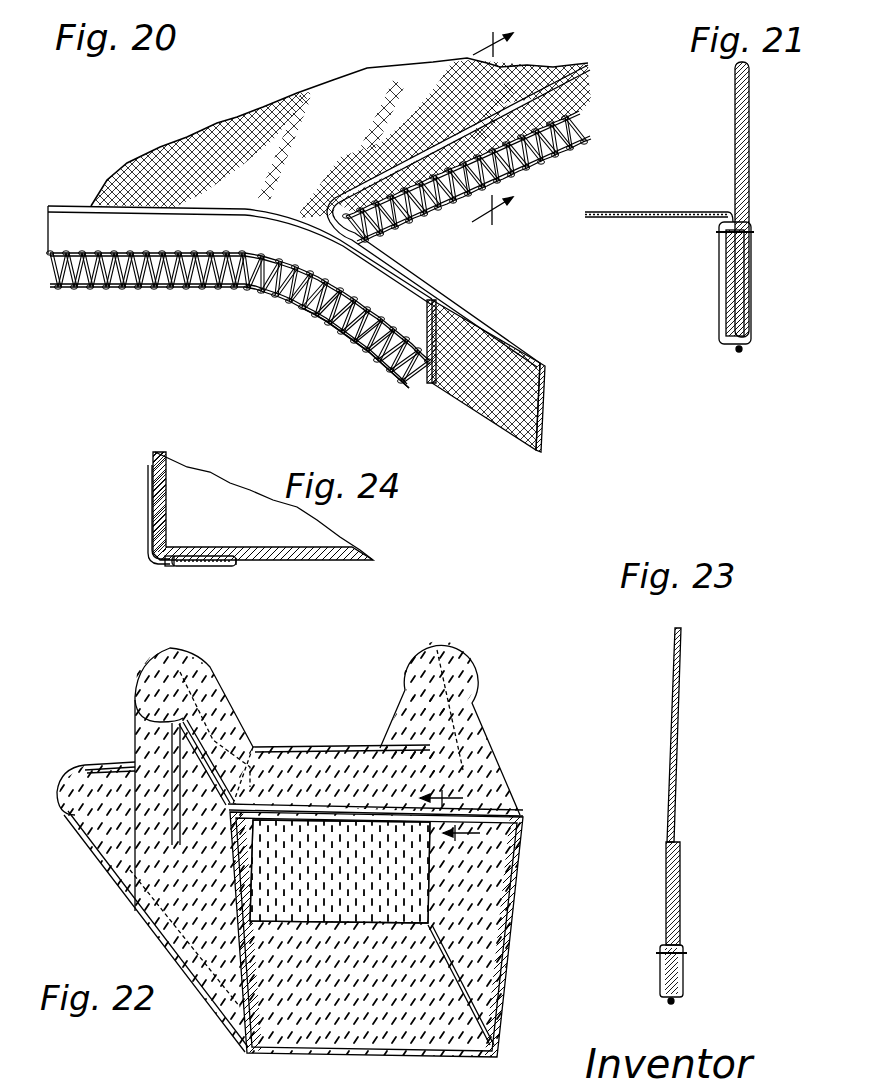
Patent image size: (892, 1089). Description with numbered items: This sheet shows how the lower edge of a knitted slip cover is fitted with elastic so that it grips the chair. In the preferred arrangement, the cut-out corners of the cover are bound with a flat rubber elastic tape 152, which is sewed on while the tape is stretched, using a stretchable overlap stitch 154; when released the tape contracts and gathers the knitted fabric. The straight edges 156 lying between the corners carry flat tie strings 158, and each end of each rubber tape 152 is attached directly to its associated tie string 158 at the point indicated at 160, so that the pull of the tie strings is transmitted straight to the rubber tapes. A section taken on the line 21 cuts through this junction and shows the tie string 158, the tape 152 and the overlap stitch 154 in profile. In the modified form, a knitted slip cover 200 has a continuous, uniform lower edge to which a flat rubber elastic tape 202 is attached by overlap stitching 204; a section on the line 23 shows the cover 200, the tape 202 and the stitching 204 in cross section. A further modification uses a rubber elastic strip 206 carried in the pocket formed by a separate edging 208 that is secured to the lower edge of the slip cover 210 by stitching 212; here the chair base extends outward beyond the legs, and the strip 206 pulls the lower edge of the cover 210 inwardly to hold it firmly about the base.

In FIG. 20, the flat rubber elastic tape 152 is at (66, 232).
In FIG. 21, the flat rubber elastic tape 152 is at (659, 217).
In FIG. 20, the stretchable overlap stitch 154 is at (167, 284).
In FIG. 21, the stretchable overlap stitch 154 is at (751, 277).
In FIG. 21, the straight edges 156 is at (728, 274).
In FIG. 20, the flat tie string 158 is at (588, 84).
In FIG. 21, the flat tie string 158 is at (750, 147).
In FIG. 20, the attachment of rubber tape to tie string 160 is at (360, 343).
In FIG. 20, the section line 21- 21 is at (510, 123).
In FIG. 23, the knitted slip cover 200 is at (674, 775).
In FIG. 22, the knitted slip cover 200 is at (470, 752).
In FIG. 23, the flat rubber elastic tape 202 is at (677, 893).
In FIG. 22, the flat rubber elastic tape 202 is at (521, 815).
In FIG. 23, the overlap stitching 204 is at (684, 950).
In FIG. 24, the rubber elastic strip 206 is at (215, 567).
In FIG. 24, the separate edging 208 is at (195, 567).
In FIG. 24, the slip cover 210 is at (148, 507).
In FIG. 24, the stitching 212 is at (170, 566).
In FIG. 22, the section line 23- 23 is at (450, 818).